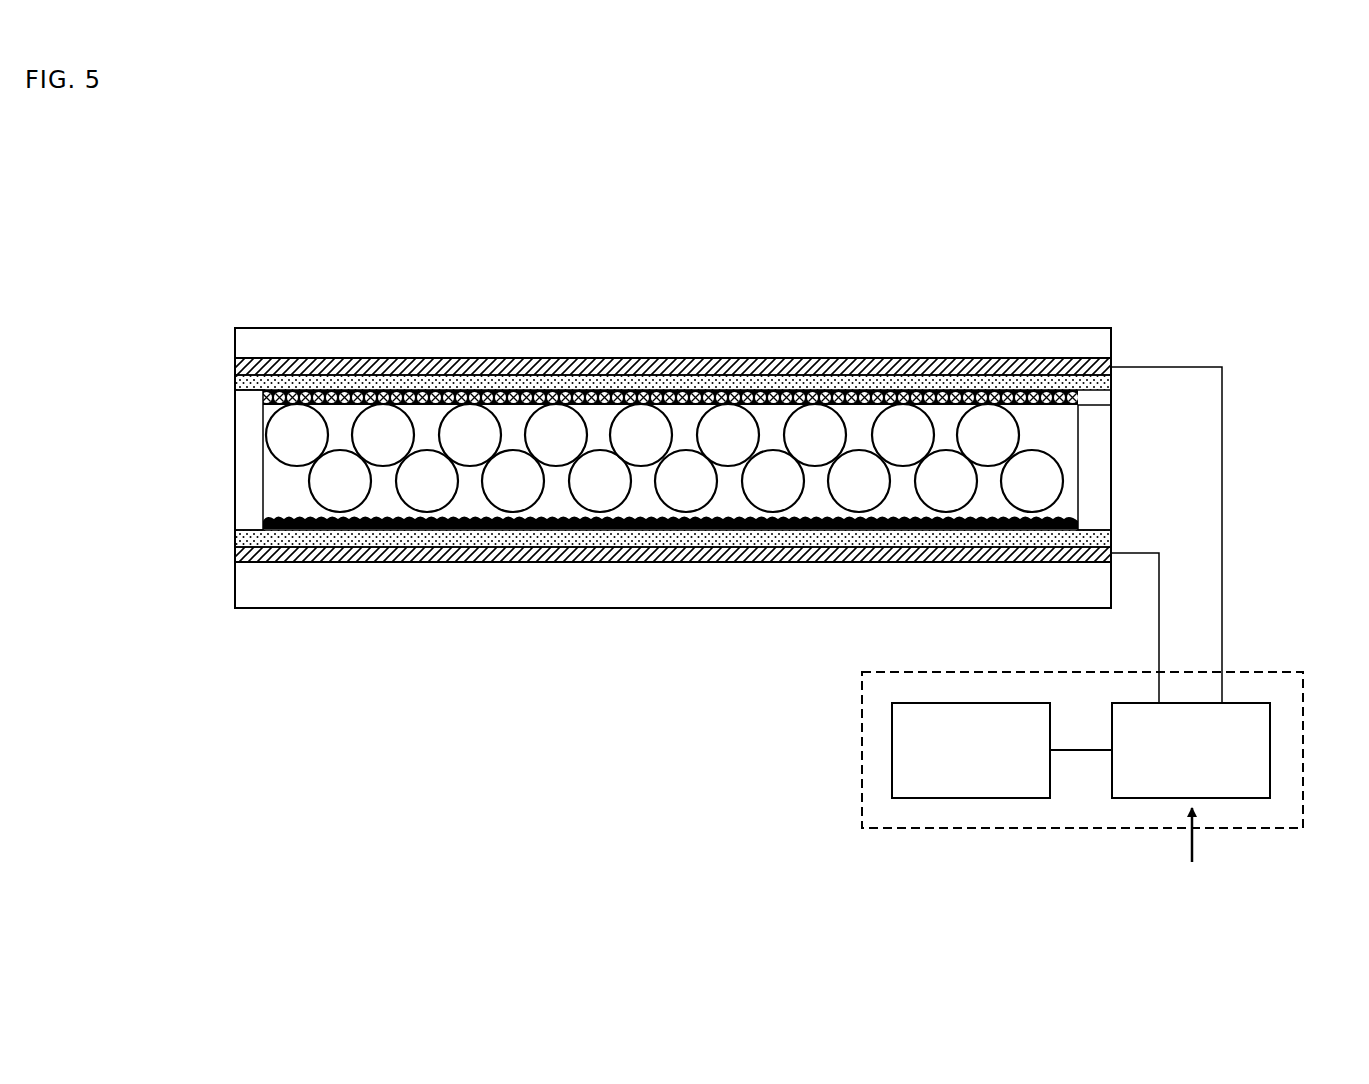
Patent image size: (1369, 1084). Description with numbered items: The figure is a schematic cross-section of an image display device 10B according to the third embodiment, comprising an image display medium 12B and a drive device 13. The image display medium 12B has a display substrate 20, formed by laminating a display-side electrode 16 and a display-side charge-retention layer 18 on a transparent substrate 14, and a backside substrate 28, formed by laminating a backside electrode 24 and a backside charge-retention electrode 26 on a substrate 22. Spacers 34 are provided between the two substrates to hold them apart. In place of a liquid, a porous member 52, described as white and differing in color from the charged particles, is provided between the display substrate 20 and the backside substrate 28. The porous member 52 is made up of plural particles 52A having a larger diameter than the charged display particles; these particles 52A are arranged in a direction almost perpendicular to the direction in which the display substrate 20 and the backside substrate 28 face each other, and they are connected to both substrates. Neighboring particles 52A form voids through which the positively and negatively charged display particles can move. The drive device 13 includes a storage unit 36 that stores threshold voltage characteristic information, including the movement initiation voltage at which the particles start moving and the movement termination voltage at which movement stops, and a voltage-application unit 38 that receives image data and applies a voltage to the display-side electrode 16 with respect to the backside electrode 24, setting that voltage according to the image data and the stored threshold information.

The image display device 10B is at (778, 180).
The image display medium 12B is at (815, 285).
The display substrate 20 is at (493, 278).
The transparent substrate 14 is at (372, 342).
The display-side electrode 16 is at (422, 368).
The display-side charge-retention layer 18 is at (477, 380).
The porous member 52 is at (1043, 425).
The particles 52A is at (862, 485).
The spacers 34 is at (1095, 438).
The backside substrate 28 is at (463, 686).
The substrate 22 is at (345, 600).
The backside electrode 24 is at (383, 556).
The backside charge-retention electrode 26 is at (452, 540).
The drive device 13 is at (928, 830).
The storage unit 36 is at (892, 760).
The voltage-application unit 38 is at (1270, 748).